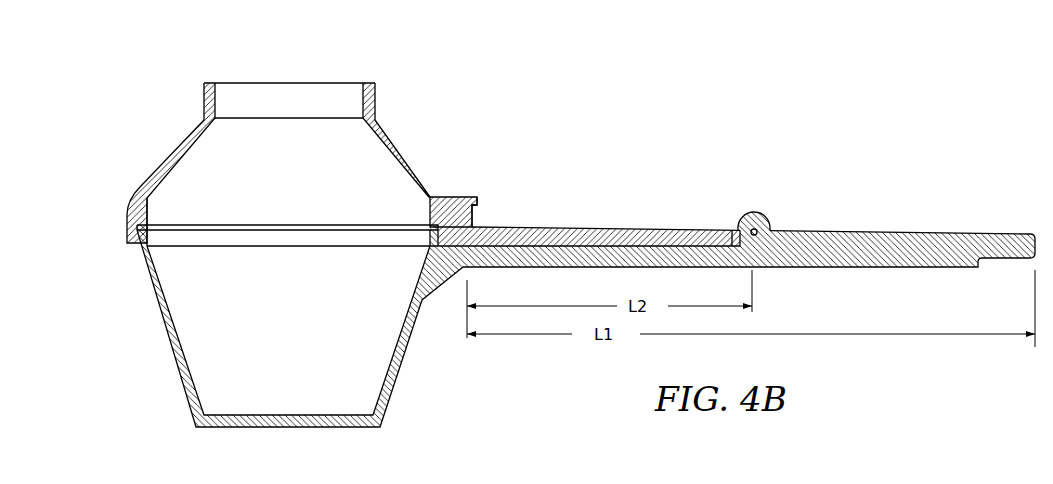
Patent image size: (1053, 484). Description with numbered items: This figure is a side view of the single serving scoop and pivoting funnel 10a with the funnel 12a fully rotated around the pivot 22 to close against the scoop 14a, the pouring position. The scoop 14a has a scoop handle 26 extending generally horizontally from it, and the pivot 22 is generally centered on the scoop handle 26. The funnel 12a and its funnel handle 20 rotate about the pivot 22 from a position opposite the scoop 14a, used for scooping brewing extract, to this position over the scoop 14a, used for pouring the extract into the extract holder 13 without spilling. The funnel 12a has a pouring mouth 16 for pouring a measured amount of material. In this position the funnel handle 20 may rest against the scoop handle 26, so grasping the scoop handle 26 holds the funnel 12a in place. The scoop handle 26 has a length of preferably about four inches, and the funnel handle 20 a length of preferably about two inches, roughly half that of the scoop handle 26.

The single serving scoop and pivoting funnel 10a is at (128, 140).
The funnel 12a is at (403, 160).
The extract holder 13 is at (477, 203).
The scoop 14a is at (405, 357).
The pouring mouth 16 is at (283, 107).
The funnel handle 20 is at (613, 229).
The pivot 22 is at (760, 203).
The scoop handle 26 is at (838, 234).